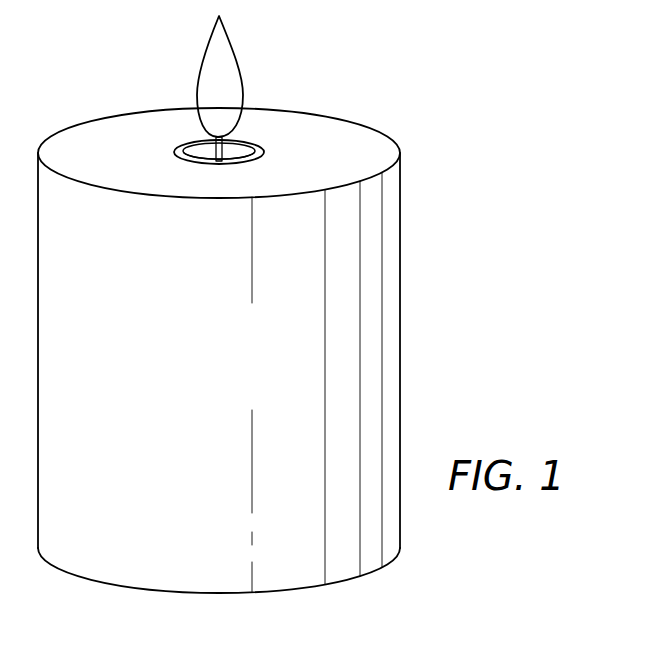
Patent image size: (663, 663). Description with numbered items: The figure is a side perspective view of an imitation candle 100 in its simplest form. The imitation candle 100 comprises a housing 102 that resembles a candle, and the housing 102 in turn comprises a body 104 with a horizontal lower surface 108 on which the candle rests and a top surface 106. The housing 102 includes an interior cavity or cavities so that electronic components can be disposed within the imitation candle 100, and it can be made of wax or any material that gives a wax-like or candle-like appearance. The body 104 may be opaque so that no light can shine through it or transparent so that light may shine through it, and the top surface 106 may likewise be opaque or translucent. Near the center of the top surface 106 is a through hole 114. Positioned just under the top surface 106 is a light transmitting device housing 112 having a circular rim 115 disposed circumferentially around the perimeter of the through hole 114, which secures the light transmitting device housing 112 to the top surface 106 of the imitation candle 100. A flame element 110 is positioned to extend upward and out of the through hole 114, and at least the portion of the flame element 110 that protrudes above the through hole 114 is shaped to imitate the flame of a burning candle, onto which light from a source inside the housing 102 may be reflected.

The imitation candle 100 is at (433, 112).
The housing 102 is at (400, 232).
The body 104 is at (312, 350).
The top surface 106 is at (322, 133).
The horizontal lower surface 108 is at (117, 587).
The flame element 110 is at (212, 65).
The light transmitting device housing 112 is at (207, 155).
The through hole 114 is at (237, 152).
The circular rim 115 is at (243, 150).